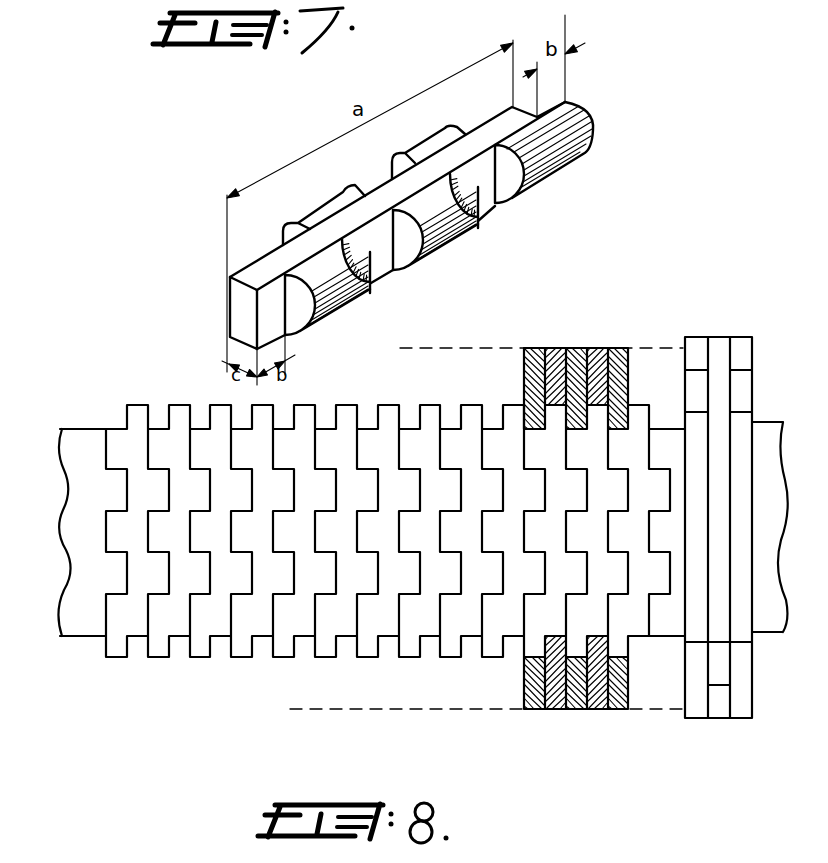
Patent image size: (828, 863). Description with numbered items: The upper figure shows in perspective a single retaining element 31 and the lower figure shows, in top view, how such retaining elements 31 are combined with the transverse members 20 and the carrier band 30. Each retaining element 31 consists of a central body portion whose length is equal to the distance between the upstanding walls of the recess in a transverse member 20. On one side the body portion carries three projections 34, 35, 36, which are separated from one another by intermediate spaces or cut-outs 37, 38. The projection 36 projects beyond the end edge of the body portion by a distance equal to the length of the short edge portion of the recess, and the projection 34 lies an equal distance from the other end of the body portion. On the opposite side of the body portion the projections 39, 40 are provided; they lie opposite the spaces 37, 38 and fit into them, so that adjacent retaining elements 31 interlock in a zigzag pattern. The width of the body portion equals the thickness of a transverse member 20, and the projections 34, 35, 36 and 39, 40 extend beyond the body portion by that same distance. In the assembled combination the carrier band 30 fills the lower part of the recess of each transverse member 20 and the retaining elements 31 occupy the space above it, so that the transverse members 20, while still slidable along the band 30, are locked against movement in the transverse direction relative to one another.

In FIG. 8, the transverse member 20 is at (534, 705).
In FIG. 8, the carrier band 30 is at (771, 624).
In FIG. 8, the retaining element 31 is at (418, 638).
In FIG. 7, the projection 34 is at (342, 308).
In FIG. 7, the projection 35 is at (452, 243).
In FIG. 7, the projection 36 is at (562, 167).
In FIG. 7, the intermediate space (cut-out) 37 is at (385, 278).
In FIG. 7, the intermediate space (cut-out) 38 is at (488, 208).
In FIG. 7, the projection 39 is at (327, 206).
In FIG. 7, the projection 40 is at (420, 144).